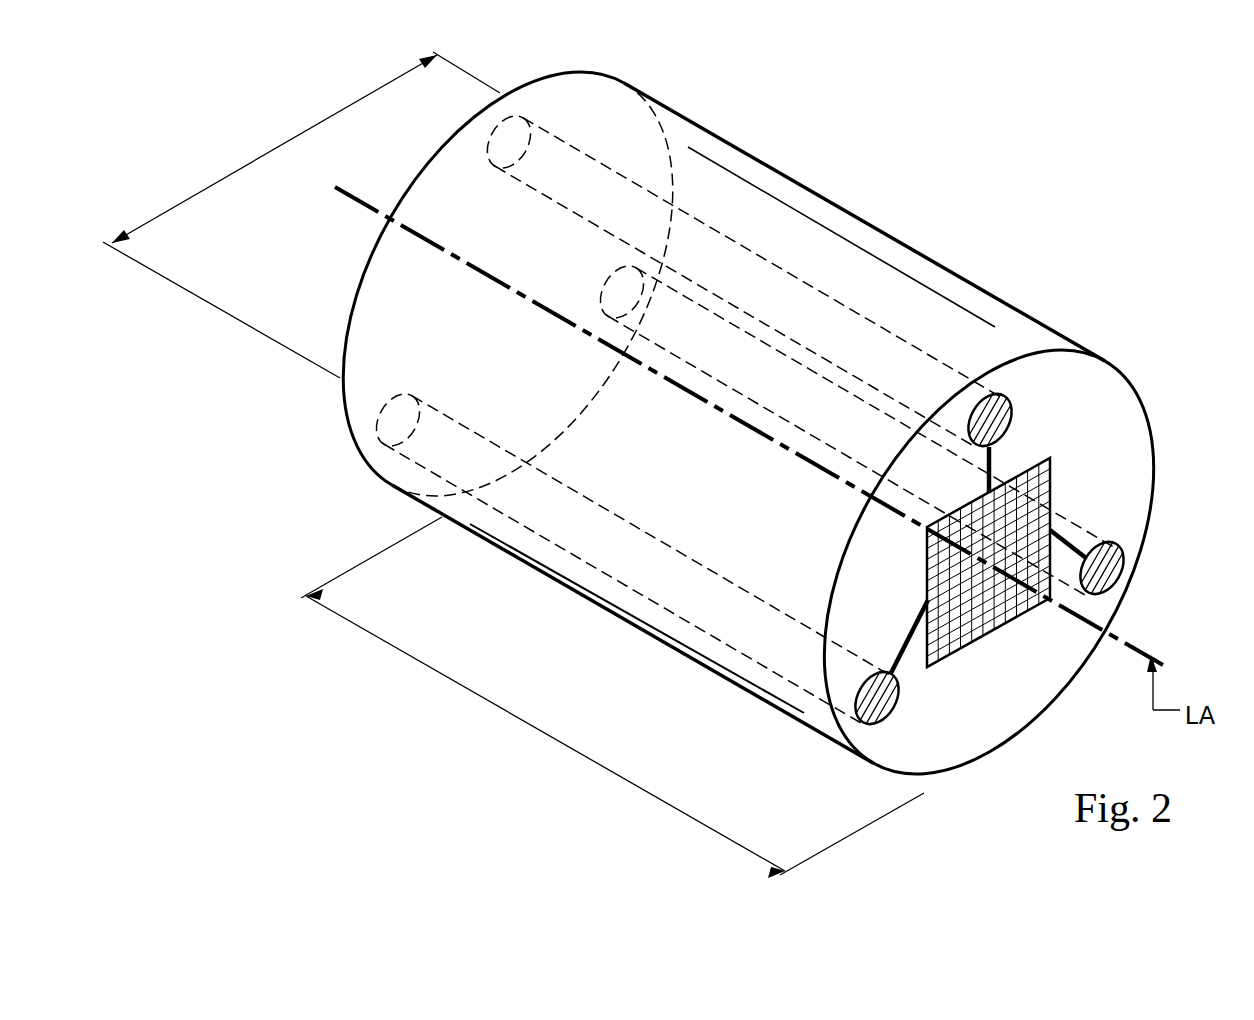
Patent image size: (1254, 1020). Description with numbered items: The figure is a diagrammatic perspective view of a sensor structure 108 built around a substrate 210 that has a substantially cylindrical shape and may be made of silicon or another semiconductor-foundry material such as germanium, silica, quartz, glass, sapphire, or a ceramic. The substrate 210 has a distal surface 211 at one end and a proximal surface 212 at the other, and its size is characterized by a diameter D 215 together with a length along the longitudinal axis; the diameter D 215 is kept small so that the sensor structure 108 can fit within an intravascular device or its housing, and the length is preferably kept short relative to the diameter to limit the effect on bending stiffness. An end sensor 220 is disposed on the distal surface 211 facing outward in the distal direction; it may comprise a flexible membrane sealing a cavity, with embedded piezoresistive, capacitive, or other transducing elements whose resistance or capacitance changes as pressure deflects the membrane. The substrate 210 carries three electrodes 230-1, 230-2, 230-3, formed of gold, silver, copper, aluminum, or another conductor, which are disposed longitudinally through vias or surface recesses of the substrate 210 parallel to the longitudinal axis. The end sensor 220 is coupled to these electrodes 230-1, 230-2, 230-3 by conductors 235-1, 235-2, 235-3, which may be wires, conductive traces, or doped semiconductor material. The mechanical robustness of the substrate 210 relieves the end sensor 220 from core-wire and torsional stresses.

The sensor structure 108 is at (900, 178).
The substrate 210 is at (652, 481).
The distal surface 211 is at (1148, 473).
The proximal surface 212 is at (368, 296).
The diameter D 215 is at (358, 100).
The end sensor 220 is at (1003, 632).
The electrode 230-1 is at (1015, 418).
The electrode 230-2 is at (1128, 566).
The electrode 230-3 is at (895, 712).
The conductor 235-1 is at (995, 462).
The conductor 235-2 is at (1072, 540).
The conductor 235-3 is at (905, 635).